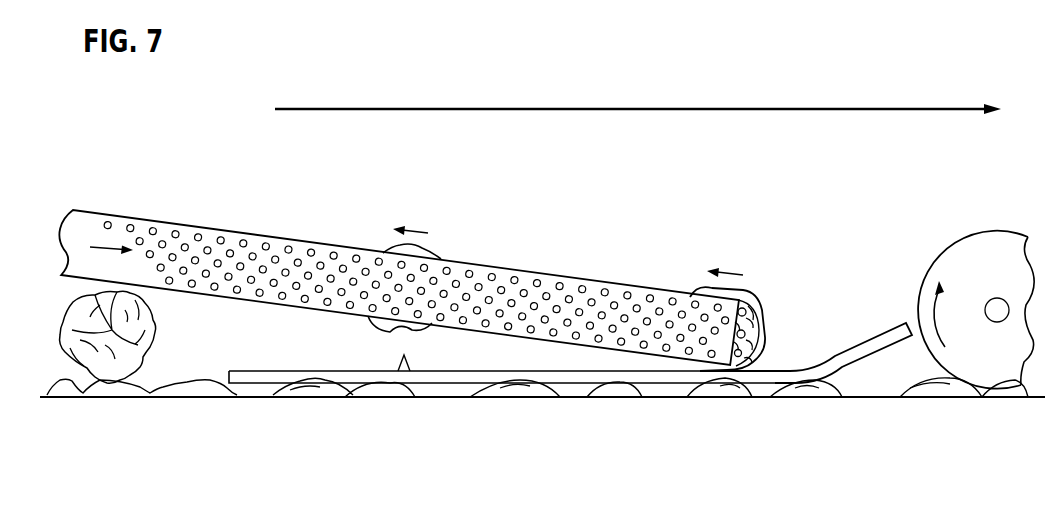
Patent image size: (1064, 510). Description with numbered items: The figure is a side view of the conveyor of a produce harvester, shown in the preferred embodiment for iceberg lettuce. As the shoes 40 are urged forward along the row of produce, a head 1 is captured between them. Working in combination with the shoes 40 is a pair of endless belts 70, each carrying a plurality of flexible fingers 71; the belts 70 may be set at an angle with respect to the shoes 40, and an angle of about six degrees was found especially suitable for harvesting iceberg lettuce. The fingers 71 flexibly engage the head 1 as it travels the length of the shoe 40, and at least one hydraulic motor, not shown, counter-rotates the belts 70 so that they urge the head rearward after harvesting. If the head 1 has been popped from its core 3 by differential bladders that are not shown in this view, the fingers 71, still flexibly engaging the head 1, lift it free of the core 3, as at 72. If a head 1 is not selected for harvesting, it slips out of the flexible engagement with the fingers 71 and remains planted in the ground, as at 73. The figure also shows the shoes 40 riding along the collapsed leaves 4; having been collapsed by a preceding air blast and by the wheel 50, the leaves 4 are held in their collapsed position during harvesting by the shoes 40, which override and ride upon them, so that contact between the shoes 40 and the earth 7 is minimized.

The head 1 is at (753, 300).
The core 3 is at (395, 368).
The collapsed leaves 4 is at (320, 385).
The earth 7 is at (545, 397).
The shoes 40 is at (817, 360).
The wheel 50 is at (1001, 282).
The endless belts 70 is at (527, 277).
The flexible fingers 71 is at (625, 298).
The lifted head position 72 is at (415, 253).
The unharvested head position 73 is at (110, 355).